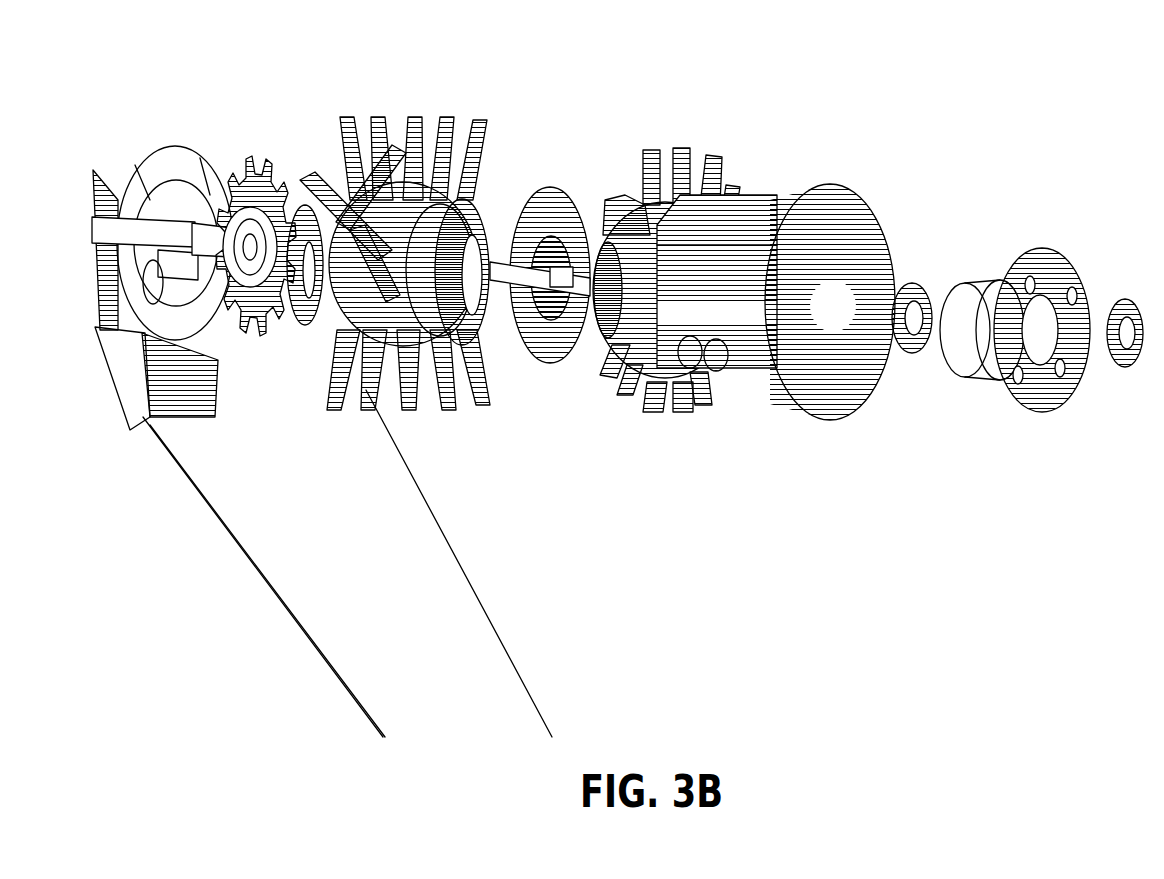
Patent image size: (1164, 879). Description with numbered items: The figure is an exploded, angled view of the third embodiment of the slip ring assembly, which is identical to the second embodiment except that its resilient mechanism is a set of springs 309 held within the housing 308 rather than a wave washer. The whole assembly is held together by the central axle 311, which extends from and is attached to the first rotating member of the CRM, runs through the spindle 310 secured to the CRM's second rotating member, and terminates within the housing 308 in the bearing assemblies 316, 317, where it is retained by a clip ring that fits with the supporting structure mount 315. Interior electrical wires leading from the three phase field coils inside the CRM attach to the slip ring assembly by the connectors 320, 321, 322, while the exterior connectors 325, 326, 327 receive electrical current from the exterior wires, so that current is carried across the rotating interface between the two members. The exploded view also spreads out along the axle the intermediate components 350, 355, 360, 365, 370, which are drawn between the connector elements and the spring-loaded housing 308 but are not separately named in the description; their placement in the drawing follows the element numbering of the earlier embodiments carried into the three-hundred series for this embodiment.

The housing 308 is at (802, 192).
The set of springs 309 is at (708, 370).
The spindle 310 is at (160, 147).
The central axle 311 is at (268, 262).
The supporting structure mount 315 is at (1027, 270).
The bearing assembly 316 is at (897, 290).
The bearing assembly 317 is at (1098, 360).
The connector 320 is at (248, 182).
The connector 321 is at (545, 190).
The connector 322 is at (527, 280).
The exterior connector 325 is at (380, 117).
The exterior connector 326 is at (452, 140).
The exterior connector 327 is at (690, 150).
The spacer ring 350 is at (322, 185).
The ring 355 is at (462, 345).
The spacer ring 360 is at (632, 196).
The spider coupling 365 is at (388, 200).
The inner ring 370 is at (557, 238).